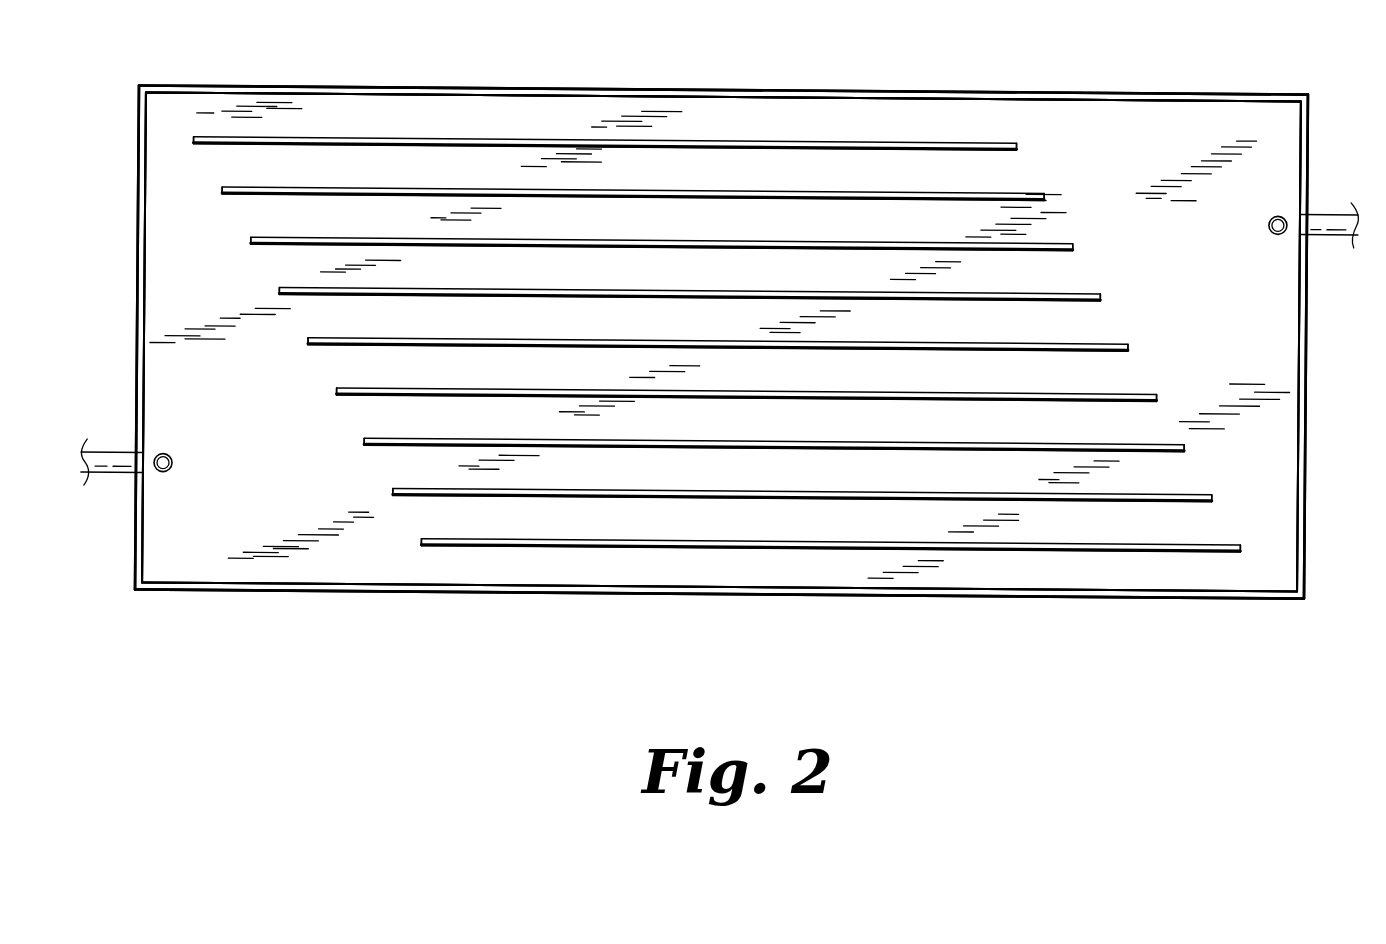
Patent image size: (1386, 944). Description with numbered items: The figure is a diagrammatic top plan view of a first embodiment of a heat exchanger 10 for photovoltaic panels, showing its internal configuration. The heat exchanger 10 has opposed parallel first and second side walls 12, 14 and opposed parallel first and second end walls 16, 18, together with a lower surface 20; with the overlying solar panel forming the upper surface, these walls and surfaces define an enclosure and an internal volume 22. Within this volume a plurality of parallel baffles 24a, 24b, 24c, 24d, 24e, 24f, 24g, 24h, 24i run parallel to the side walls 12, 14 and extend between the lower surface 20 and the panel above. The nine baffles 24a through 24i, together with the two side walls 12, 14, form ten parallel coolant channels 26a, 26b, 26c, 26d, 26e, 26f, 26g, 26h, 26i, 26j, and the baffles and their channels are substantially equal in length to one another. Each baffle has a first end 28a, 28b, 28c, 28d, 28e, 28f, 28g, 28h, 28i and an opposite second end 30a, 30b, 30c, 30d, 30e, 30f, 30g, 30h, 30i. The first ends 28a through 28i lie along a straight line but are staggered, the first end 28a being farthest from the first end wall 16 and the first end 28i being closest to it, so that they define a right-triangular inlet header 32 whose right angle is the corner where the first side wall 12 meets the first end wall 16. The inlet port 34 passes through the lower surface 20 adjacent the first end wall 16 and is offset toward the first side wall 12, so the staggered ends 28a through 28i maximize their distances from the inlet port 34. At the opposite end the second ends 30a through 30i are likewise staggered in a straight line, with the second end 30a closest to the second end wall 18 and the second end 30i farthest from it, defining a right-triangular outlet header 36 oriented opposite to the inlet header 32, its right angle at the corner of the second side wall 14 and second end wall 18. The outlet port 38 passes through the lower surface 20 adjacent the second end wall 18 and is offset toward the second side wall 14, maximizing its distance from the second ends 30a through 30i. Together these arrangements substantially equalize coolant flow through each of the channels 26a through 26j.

The heat exchanger 10 is at (400, 653).
The first side wall 12 is at (619, 88).
The second side wall 14 is at (622, 599).
The first end wall 16 is at (1306, 382).
The second end wall 18 is at (134, 312).
The lower surface 20 is at (543, 120).
The internal volume 22 is at (848, 576).
The baffle 24a is at (672, 140).
The baffle 24b is at (728, 192).
The baffle 24c is at (802, 242).
The baffle 24d is at (860, 291).
The baffle 24e is at (920, 343).
The baffle 24f is at (1055, 400).
The baffle 24g is at (1107, 450).
The baffle 24h is at (1175, 502).
The baffle 24i is at (1218, 550).
The coolant channel 26a is at (457, 128).
The coolant channel 26b is at (457, 178).
The coolant channel 26c is at (395, 226).
The coolant channel 26d is at (489, 278).
The coolant channel 26e is at (480, 327).
The coolant channel 26f is at (473, 377).
The coolant channel 26g is at (482, 429).
The coolant channel 26h is at (712, 481).
The coolant channel 26i is at (633, 531).
The coolant channel 26j is at (580, 579).
The first end 28a is at (1015, 147).
The first end 28b is at (1043, 197).
The first end 28c is at (1072, 247).
The first end 28d is at (1100, 297).
The first end 28e is at (1128, 347).
The first end 28f is at (1157, 397).
The first end 28g is at (1185, 450).
The first end 28h is at (1213, 497).
The first end 28i is at (1242, 547).
The second end 30a is at (192, 141).
The second end 30b is at (222, 191).
The second end 30c is at (250, 244).
The second end 30d is at (280, 292).
The second end 30e is at (308, 343).
The second end 30f is at (337, 393).
The second end 30g is at (365, 443).
The second end 30h is at (394, 493).
The second end 30i is at (422, 541).
The inlet header 32 is at (1270, 173).
The inlet port 34 is at (1265, 258).
The outlet header 36 is at (176, 419).
The outlet port 38 is at (175, 485).